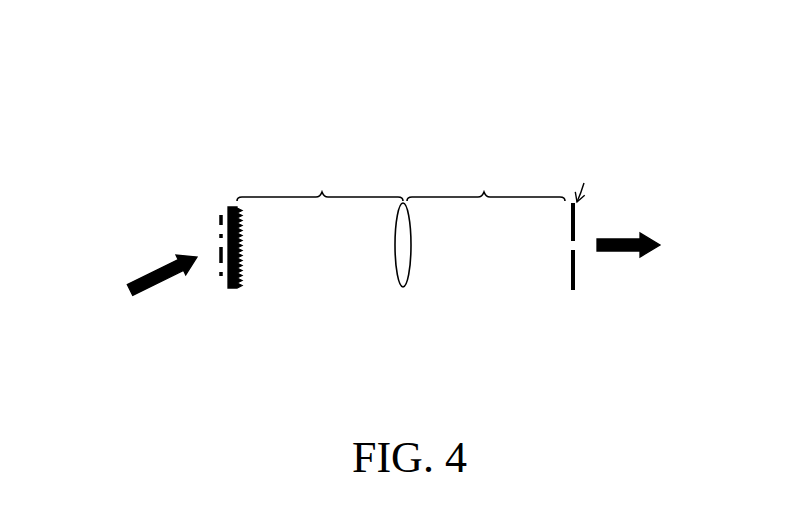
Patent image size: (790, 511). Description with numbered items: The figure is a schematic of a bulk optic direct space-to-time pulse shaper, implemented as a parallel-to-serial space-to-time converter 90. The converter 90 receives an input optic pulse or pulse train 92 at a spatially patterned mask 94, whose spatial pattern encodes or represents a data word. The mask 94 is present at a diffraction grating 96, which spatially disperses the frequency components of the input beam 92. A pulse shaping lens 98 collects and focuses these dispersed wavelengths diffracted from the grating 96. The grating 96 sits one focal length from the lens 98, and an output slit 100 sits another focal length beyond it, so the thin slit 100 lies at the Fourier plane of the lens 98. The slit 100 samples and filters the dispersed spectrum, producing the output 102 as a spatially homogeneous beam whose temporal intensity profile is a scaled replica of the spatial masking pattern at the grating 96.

The space-to-time converter 90 is at (91, 77).
The input optic pulse 92 is at (152, 290).
The spatially patterned mask 94 is at (215, 285).
The diffraction grating 96 is at (233, 289).
The pulse shaping lens 98 is at (403, 287).
The output slit 100 is at (572, 306).
The output beam 102 is at (627, 252).